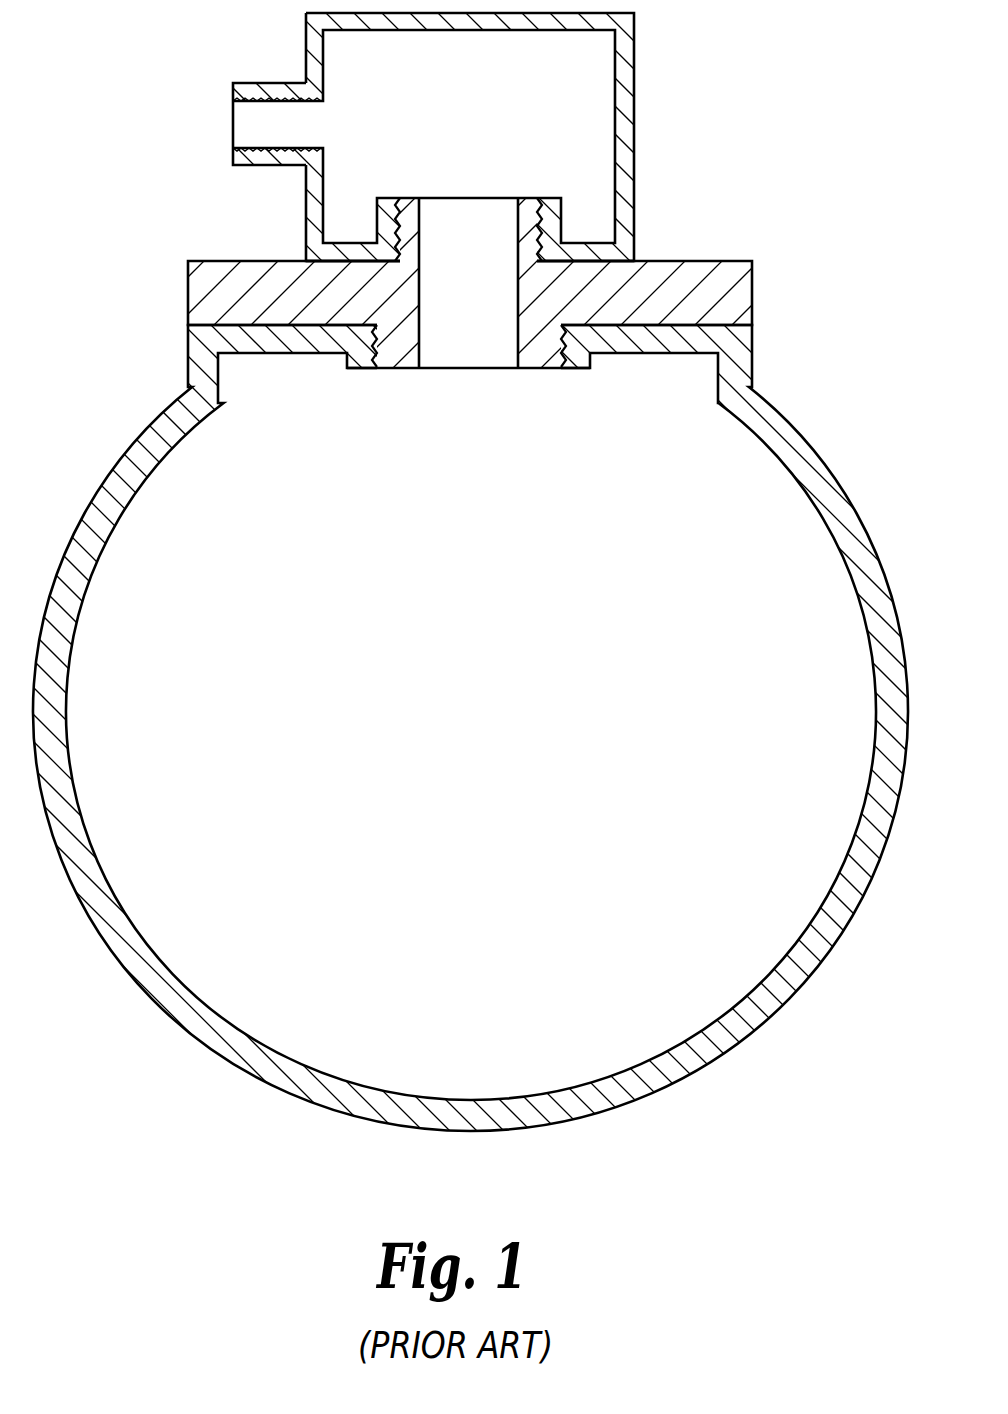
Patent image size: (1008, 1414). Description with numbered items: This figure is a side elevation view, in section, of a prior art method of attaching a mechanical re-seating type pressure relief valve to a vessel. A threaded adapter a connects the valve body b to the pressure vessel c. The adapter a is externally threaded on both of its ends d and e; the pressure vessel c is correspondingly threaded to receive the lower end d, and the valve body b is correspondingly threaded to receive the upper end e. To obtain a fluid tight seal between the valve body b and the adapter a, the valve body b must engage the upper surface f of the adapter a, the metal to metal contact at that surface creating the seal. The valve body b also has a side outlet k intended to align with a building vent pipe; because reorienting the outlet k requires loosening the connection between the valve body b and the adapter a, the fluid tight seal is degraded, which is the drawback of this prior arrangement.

The adapter a is at (727, 295).
The valve body b is at (613, 128).
The pressure vessel c is at (660, 610).
The end d is at (577, 368).
The end e is at (543, 218).
The upper surface f is at (633, 260).
The valve body outlet k is at (232, 93).